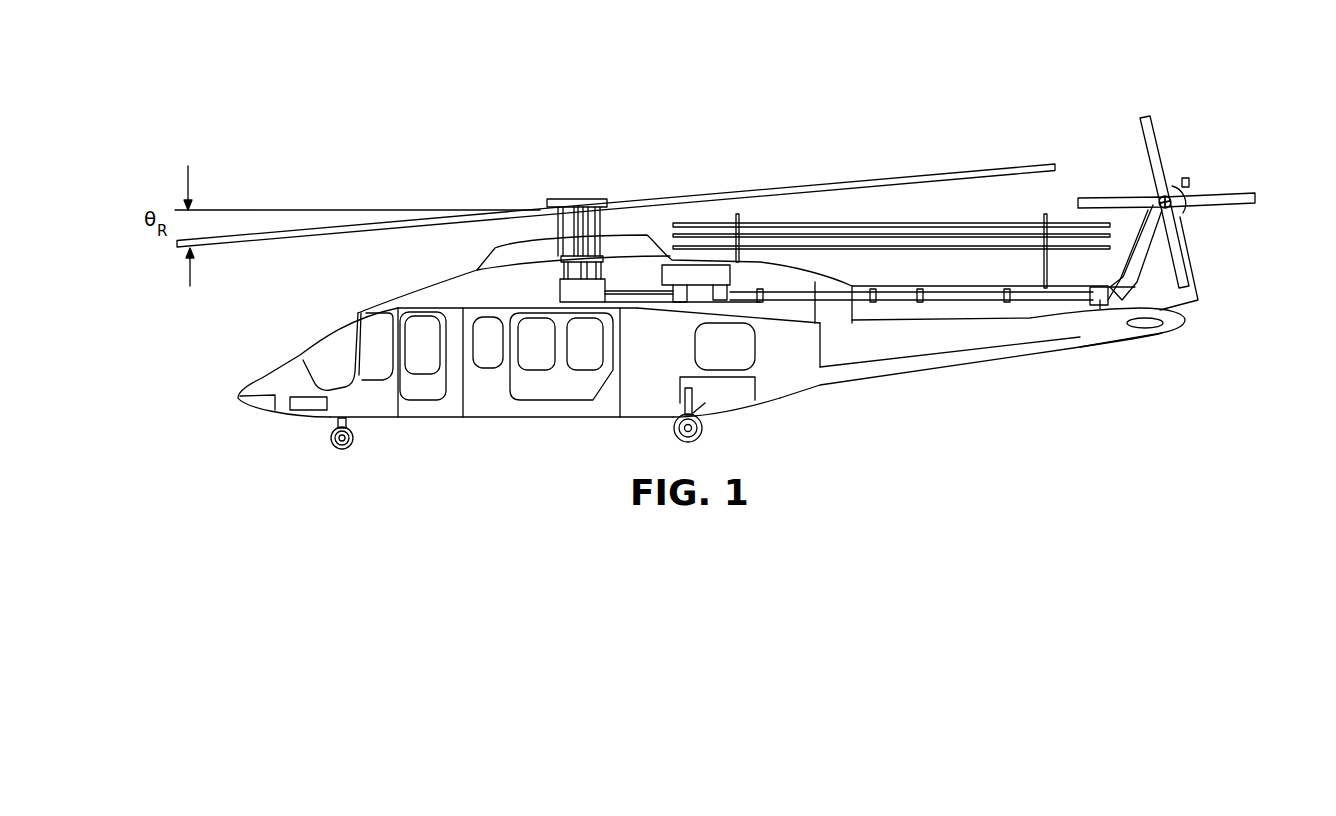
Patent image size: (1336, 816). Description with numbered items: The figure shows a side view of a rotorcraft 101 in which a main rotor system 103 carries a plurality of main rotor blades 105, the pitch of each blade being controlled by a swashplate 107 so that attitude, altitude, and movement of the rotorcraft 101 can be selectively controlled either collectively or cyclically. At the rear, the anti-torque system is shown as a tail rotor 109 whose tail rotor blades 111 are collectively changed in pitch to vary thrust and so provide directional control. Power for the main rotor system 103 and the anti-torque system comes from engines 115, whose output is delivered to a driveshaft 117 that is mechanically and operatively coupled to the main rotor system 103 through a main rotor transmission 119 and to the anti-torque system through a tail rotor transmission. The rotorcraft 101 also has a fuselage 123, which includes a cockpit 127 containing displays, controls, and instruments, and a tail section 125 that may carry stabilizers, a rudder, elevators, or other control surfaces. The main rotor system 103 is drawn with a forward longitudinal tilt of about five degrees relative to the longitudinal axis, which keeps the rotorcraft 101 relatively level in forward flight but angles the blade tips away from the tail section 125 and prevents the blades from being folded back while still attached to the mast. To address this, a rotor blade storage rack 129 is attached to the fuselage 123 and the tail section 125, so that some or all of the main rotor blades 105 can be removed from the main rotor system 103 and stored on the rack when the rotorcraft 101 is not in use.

The rotorcraft 101 is at (412, 89).
The main rotor system 103 is at (620, 176).
The main rotor blades 105 is at (864, 180).
The swashplate 107 is at (547, 259).
The tail rotor 109 is at (1199, 162).
The tail rotor blades 111 is at (1230, 212).
The engines 115 is at (695, 273).
The driveshaft 117 is at (637, 304).
The main rotor transmission 119 is at (553, 293).
The fuselage 123 is at (492, 420).
The tail section 125 is at (993, 364).
The cockpit 127 is at (318, 345).
The rotor blade storage rack 129 is at (1060, 196).